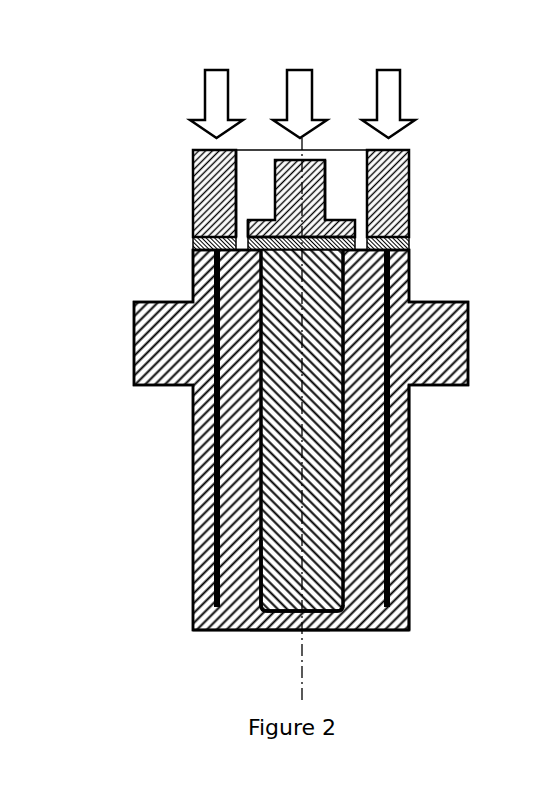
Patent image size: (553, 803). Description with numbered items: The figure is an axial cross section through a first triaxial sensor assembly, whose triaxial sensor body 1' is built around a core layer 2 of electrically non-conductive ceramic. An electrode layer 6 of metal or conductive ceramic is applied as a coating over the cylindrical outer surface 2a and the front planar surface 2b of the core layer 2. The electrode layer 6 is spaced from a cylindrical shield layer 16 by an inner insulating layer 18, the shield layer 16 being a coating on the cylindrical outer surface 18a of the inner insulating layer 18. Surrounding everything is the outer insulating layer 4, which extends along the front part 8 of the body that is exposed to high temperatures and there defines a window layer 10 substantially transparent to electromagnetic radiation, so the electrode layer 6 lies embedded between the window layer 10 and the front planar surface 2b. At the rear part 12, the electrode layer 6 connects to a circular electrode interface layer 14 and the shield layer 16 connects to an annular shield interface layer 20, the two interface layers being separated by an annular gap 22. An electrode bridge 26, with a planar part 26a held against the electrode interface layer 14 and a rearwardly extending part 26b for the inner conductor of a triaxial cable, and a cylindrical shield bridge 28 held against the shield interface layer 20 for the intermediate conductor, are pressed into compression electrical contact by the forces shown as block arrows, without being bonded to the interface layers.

The triaxial sensor body 1' is at (249, 430).
The core layer 2 is at (262, 428).
The cylindrical outer surface 2a is at (322, 478).
The front planar surface 2b is at (340, 605).
The outer insulating layer 4 is at (400, 277).
The electrode layer 6 is at (250, 543).
The front part 8 is at (215, 660).
The window layer 10 is at (282, 618).
The rear part 12 is at (425, 248).
The electrode interface layer 14 is at (266, 240).
The shield layer 16 is at (388, 423).
The inner insulating layer 18 is at (367, 552).
The cylindrical outer surface 18a is at (238, 368).
The shield interface layer 20 is at (193, 240).
The annular gap 22 is at (242, 246).
The electrode bridge 26 is at (275, 182).
The planar part 26a is at (368, 195).
The rearwardly extending part 26b is at (325, 180).
The shield bridge 28 is at (200, 167).